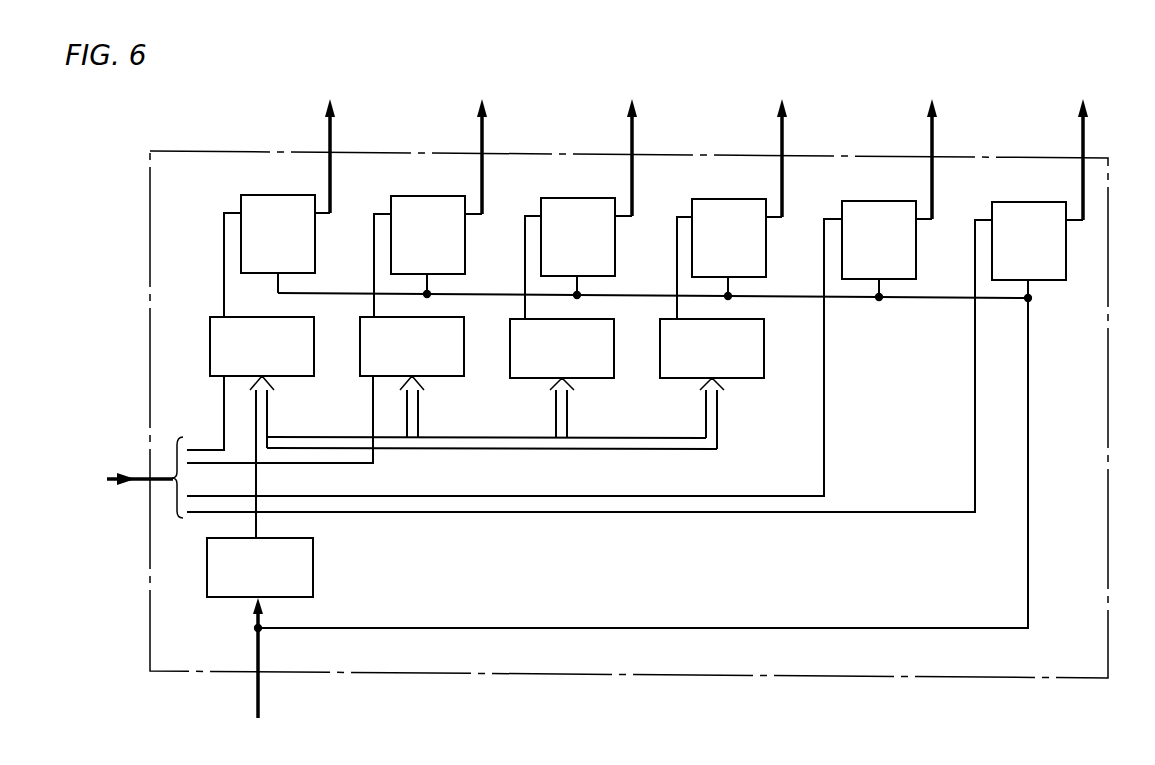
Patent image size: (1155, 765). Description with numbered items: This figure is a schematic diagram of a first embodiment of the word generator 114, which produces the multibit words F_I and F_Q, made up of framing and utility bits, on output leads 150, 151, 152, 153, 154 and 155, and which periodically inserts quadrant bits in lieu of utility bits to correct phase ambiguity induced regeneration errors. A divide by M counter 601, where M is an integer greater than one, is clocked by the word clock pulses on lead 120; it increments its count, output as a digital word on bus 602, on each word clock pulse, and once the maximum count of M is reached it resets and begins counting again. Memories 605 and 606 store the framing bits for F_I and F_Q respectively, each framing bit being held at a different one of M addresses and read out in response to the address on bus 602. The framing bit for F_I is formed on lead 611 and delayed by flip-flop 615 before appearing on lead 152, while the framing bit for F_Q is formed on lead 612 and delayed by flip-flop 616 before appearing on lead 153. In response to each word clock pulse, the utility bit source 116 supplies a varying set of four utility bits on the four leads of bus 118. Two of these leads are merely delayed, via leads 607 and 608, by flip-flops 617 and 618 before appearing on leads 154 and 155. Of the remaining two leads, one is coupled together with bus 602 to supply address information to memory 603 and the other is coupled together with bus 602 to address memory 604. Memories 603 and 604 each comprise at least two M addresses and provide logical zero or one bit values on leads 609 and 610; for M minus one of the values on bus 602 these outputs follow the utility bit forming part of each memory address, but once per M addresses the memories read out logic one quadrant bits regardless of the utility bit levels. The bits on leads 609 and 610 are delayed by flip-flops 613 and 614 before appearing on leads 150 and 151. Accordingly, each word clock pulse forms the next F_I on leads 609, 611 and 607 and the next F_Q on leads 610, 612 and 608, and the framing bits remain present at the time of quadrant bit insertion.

The word generator 114 is at (1108, 651).
The utility bit source 116 is at (67, 484).
The bus 118 is at (115, 472).
The lead 120 is at (262, 703).
The lead 150 is at (329, 121).
The lead 151 is at (481, 121).
The lead 152 is at (631, 121).
The lead 153 is at (781, 121).
The lead 154 is at (931, 121).
The lead 155 is at (1081, 121).
The divide by M counter 601 is at (315, 573).
The bus 602 is at (717, 452).
The memory 603 is at (262, 346).
The memory 604 is at (412, 346).
The memory 605 is at (562, 348).
The memory 606 is at (712, 348).
The lead 607 is at (826, 441).
The lead 608 is at (977, 441).
The lead 609 is at (223, 283).
The lead 610 is at (373, 283).
The lead 611 is at (524, 283).
The lead 612 is at (676, 283).
The flip-flop 613 is at (286, 194).
The flip-flop 614 is at (436, 195).
The flip-flop 615 is at (587, 197).
The flip-flop 616 is at (738, 198).
The flip-flop 617 is at (890, 200).
The flip-flop 618 is at (1039, 201).